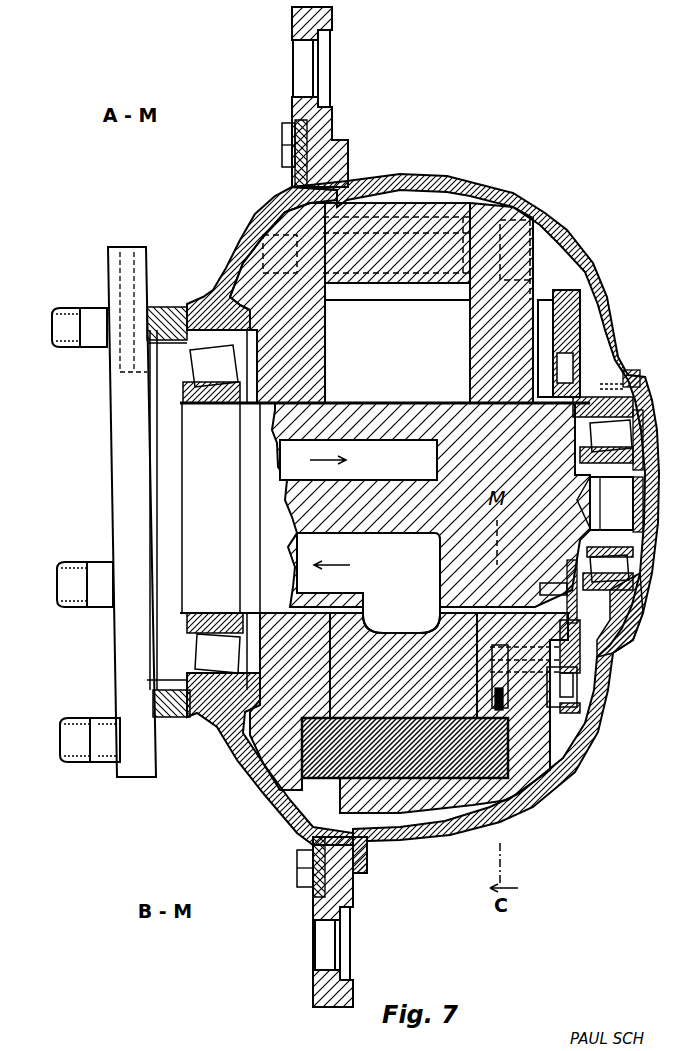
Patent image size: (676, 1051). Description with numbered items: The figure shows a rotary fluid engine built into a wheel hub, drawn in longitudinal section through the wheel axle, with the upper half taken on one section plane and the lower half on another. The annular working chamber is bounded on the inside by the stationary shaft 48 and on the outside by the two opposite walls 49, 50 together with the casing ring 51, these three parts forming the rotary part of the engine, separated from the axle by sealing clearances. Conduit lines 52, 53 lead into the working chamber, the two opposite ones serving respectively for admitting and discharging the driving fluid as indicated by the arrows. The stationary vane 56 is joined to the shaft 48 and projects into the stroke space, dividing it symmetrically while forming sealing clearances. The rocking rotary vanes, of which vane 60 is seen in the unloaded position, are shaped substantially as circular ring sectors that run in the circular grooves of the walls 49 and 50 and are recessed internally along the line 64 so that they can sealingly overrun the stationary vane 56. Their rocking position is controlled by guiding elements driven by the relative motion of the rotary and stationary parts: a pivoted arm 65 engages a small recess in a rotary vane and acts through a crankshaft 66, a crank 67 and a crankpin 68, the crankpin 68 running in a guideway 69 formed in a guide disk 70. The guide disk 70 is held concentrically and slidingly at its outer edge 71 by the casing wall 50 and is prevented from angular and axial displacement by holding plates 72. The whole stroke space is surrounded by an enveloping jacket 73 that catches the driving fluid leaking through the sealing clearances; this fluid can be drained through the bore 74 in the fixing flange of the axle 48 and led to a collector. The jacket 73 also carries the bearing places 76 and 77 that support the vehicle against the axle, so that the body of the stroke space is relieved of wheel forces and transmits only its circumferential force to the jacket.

The shaft 48 is at (348, 406).
The wall 49 is at (308, 342).
The wall 50 is at (495, 351).
The casing ring 51 is at (410, 280).
The conduit line 52 is at (358, 460).
The conduit line 53 is at (368, 583).
The stationary vane 56 is at (402, 648).
The rotary vane 60 is at (405, 748).
The recess line 64 is at (385, 723).
The pivoted arm 65 is at (572, 750).
The crankshaft 66 is at (580, 727).
The crank 67 is at (585, 706).
The crankpin 68 is at (566, 684).
The guideway 69 is at (568, 368).
The guide disk 70 is at (603, 343).
The outer edge of guide disk 71 is at (568, 292).
The holding plate 72 is at (618, 632).
The jacket 73 is at (393, 186).
The bore 74 is at (120, 252).
The bearing place 76 is at (211, 374).
The bearing place 77 is at (608, 433).